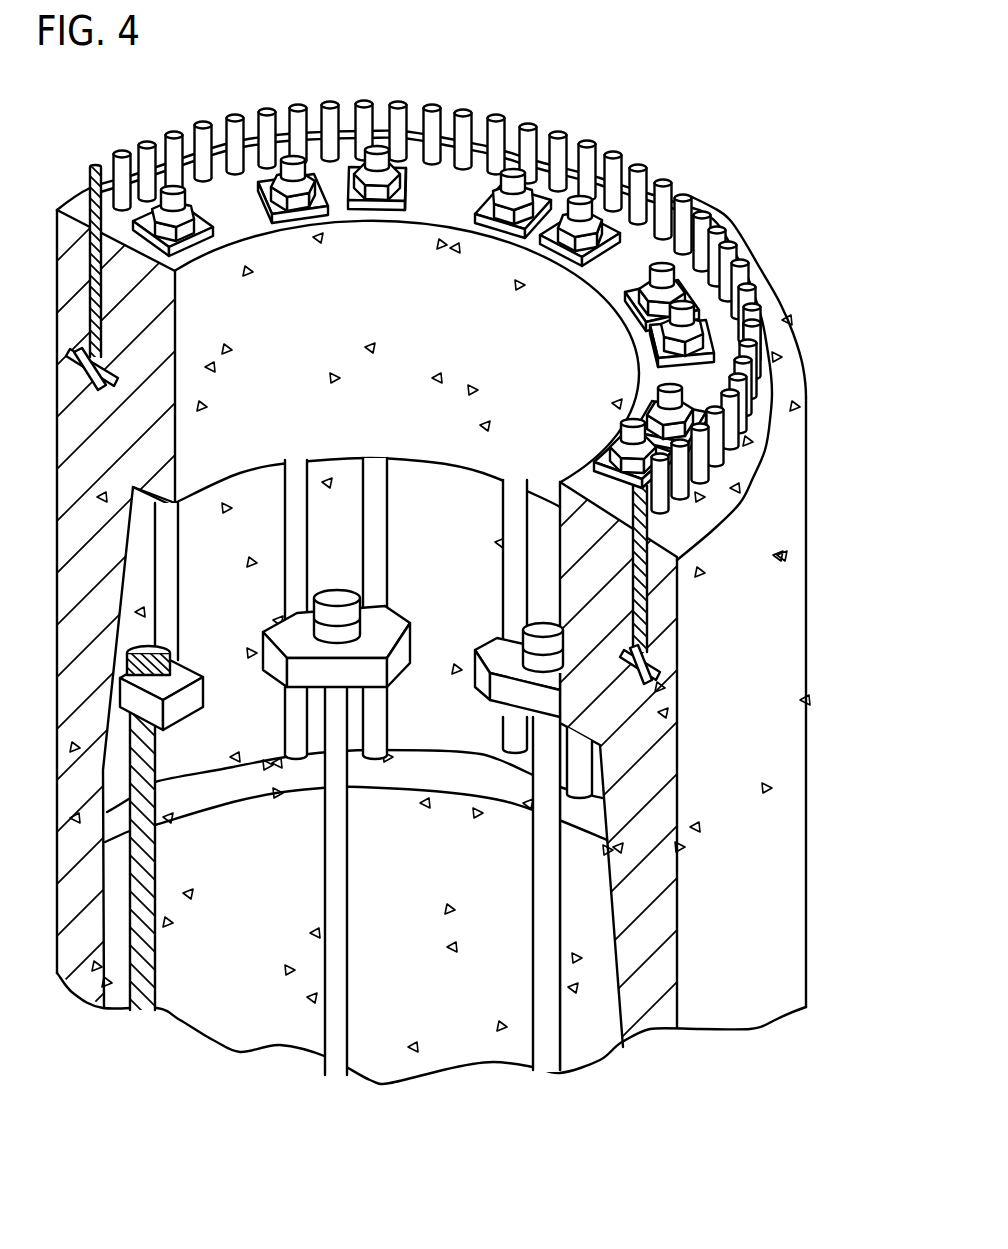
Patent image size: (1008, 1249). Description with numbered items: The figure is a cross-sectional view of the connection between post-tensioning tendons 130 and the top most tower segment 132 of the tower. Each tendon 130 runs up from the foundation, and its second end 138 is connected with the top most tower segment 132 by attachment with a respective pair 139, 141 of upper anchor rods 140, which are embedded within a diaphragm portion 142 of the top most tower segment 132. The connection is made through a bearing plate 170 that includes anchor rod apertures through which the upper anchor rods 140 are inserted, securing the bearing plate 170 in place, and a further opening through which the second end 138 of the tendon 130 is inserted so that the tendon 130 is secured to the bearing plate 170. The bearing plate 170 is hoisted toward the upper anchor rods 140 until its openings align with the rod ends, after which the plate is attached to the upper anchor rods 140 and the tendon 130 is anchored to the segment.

The post-tensioning tendon 130 is at (345, 877).
The top most tower segment 132 is at (777, 628).
The second end 138 is at (547, 627).
The upper anchor rod of the pair 139 is at (293, 530).
The upper anchor rods 140 is at (516, 500).
The upper anchor rod of the pair 141 is at (380, 508).
The diaphragm portion 142 is at (443, 338).
The bearing plate 170 is at (490, 633).